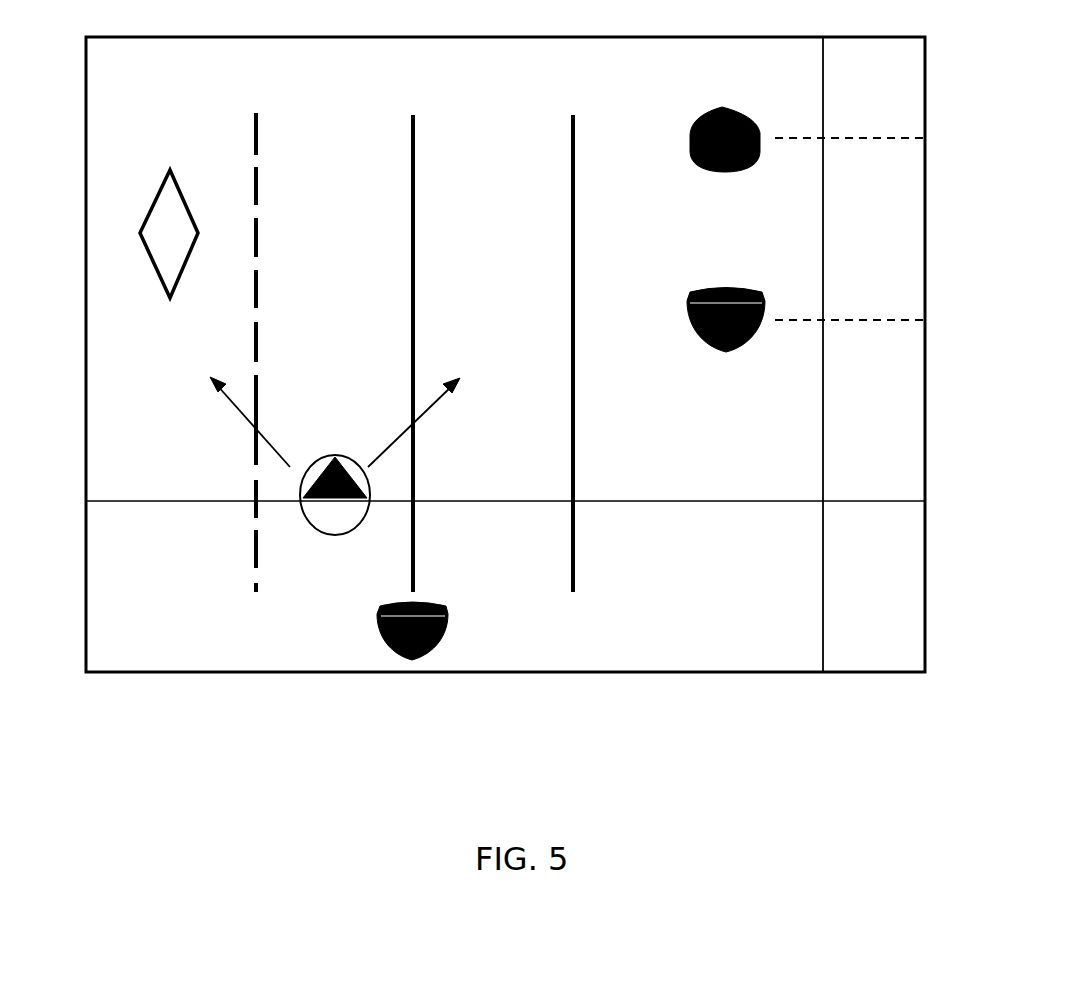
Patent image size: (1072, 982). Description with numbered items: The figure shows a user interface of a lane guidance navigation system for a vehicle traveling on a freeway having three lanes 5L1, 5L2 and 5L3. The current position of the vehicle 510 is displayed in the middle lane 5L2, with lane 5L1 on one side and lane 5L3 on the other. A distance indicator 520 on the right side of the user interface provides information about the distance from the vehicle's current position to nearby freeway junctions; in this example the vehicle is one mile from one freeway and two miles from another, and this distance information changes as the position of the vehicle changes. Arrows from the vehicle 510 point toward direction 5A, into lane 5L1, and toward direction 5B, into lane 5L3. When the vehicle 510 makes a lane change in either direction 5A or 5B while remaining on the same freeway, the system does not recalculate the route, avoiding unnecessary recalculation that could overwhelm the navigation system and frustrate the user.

The direction 5A is at (235, 405).
The direction 5B is at (433, 405).
The vehicle 510 is at (302, 510).
The distance indicator 520 is at (890, 298).
The lane 5L1 is at (155, 613).
The lane 5L2 is at (300, 613).
The lane 5L3 is at (515, 613).